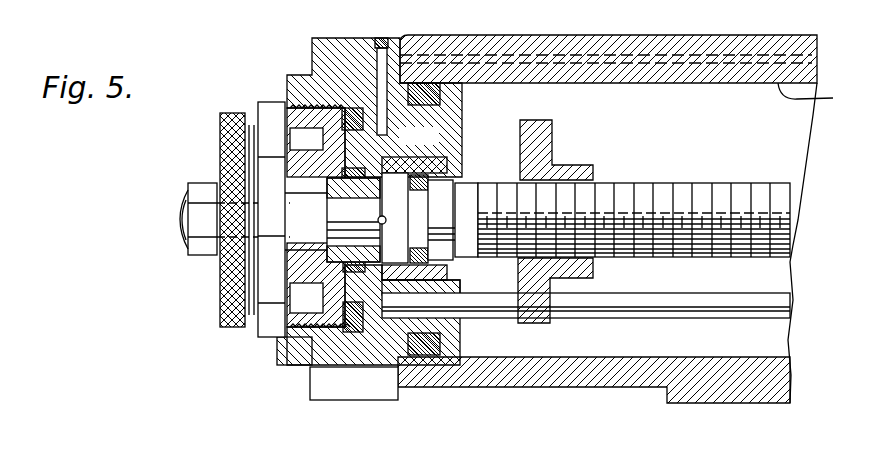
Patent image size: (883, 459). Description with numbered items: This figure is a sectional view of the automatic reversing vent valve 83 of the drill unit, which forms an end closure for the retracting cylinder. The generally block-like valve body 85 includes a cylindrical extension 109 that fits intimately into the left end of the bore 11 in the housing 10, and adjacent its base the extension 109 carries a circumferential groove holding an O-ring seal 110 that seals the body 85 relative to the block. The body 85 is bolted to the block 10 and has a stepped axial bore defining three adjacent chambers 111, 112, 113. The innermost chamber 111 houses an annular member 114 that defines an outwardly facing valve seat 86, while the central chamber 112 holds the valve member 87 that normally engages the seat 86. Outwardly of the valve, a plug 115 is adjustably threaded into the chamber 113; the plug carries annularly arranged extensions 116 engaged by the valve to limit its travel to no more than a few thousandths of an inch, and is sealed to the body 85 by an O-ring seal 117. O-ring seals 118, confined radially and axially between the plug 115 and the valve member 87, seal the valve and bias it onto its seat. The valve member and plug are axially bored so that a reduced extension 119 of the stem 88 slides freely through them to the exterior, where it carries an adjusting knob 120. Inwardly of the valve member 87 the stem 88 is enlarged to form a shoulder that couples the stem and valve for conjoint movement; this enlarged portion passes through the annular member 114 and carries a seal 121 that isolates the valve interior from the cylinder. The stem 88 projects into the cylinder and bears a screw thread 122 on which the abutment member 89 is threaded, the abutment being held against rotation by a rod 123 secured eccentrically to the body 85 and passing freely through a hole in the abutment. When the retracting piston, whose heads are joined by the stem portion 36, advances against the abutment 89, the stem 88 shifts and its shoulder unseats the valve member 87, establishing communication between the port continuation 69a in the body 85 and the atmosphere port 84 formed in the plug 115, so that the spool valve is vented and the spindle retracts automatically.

The housing 10 is at (819, 67).
The bore 11 is at (816, 95).
The stem portion 36 is at (606, 387).
The port continuation 69a is at (427, 37).
The vent valve 83 is at (271, 375).
The port 84 is at (332, 297).
The valve body 85 is at (288, 349).
The valve seat 86 is at (390, 234).
The valve member 87 is at (395, 218).
The stem 88 is at (470, 190).
The abutment 89 is at (553, 134).
The cylindrical extension 109 is at (448, 338).
The O-ring seal 110 is at (441, 97).
The chamber 111 is at (421, 298).
The central chamber 112 is at (363, 298).
The chamber 113 is at (356, 306).
The annular member 114 is at (462, 272).
The plug 115 is at (298, 262).
The extensions 116 is at (390, 128).
The O-ring seal 117 is at (316, 141).
The O-ring seals 118 is at (353, 220).
The reduced extension 119 is at (323, 225).
The adjusting knob 120 is at (218, 305).
The seal 121 is at (445, 220).
The screw thread 122 is at (700, 258).
The rod 123 is at (706, 318).